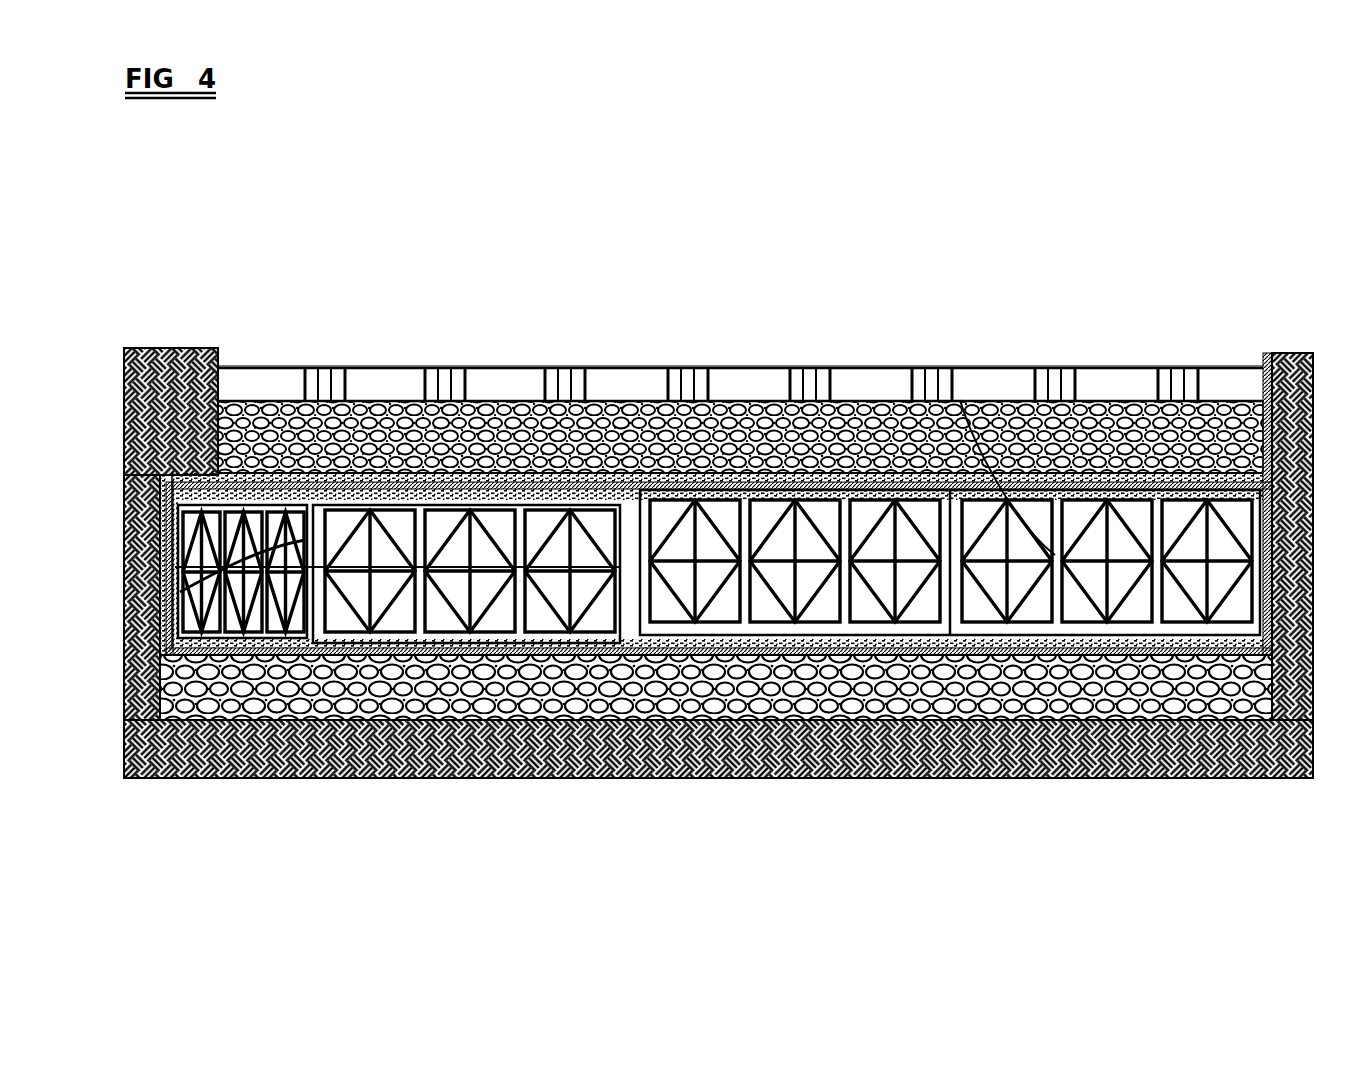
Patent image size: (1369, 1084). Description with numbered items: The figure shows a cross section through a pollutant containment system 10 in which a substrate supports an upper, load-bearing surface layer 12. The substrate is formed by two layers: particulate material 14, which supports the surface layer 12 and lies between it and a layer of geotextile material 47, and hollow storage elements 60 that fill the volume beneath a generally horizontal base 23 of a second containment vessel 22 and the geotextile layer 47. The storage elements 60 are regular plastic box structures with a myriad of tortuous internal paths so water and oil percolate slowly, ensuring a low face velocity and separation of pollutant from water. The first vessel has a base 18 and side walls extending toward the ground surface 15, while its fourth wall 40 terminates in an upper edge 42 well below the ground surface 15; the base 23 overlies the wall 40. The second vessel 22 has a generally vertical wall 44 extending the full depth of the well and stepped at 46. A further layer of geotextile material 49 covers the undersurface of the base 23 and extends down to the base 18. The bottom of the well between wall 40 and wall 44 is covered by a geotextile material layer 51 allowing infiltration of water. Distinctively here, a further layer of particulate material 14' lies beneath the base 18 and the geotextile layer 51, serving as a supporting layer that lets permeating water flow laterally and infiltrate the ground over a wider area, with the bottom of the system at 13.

The pollutant containment system 10 is at (946, 332).
The surface layer 12 is at (1140, 380).
The bottom of concrete base 13 is at (990, 778).
The substrate layer 14 is at (740, 316).
The further layer of particulate material 14' is at (716, 803).
The ground surface 15 is at (176, 348).
The base 18 is at (1217, 683).
The second containment vessel 22 is at (222, 355).
The base of second containment vessel 23 is at (548, 420).
The fourth wall 40 is at (135, 709).
The upper edge 42 is at (163, 588).
The generally vertical wall 44 is at (130, 492).
The step 46 is at (132, 420).
The layer of geotextile material 47 is at (1063, 400).
The further layer of geotextile material 49 is at (1302, 635).
The geotextile material layer 51 is at (130, 642).
The hollow storage elements 60 is at (135, 518).